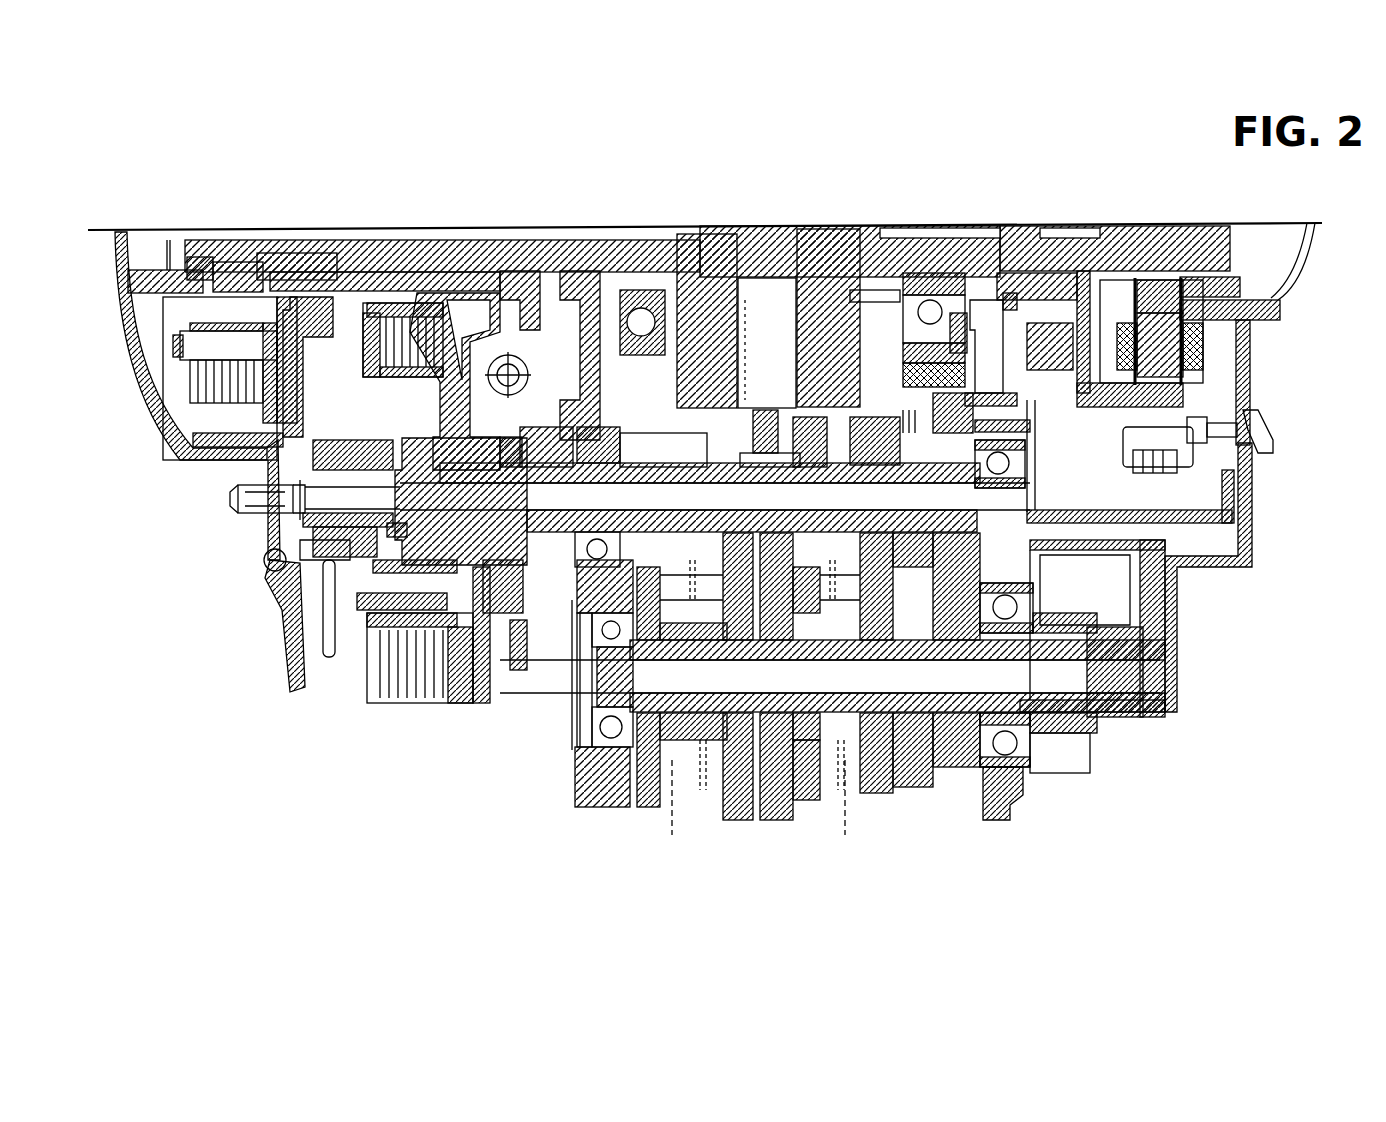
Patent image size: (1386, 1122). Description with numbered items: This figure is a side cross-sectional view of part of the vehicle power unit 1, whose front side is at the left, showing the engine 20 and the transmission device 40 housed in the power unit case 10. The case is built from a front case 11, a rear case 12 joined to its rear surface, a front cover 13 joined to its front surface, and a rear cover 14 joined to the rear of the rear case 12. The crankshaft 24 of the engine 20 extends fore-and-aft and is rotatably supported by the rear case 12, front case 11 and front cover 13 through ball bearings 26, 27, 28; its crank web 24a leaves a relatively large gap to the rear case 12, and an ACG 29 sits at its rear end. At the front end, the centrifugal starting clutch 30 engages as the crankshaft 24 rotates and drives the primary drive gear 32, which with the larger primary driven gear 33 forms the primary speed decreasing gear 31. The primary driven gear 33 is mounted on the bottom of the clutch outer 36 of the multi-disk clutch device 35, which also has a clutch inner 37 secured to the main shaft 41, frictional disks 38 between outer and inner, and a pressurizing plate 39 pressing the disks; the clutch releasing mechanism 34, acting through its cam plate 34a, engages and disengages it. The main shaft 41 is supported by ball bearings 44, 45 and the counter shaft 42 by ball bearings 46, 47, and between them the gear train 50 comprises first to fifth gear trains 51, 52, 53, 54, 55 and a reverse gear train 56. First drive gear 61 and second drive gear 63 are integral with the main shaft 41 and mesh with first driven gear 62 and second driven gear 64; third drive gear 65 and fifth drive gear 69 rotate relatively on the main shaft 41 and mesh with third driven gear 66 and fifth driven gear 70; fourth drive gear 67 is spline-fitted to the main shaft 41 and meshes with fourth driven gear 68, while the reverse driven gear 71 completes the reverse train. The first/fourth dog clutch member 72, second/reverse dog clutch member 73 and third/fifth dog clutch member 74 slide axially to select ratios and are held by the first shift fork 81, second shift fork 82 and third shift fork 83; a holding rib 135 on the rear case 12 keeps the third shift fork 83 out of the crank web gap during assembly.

The power unit 1 is at (1138, 172).
The power unit case 10 is at (1270, 420).
The front case 11 is at (575, 782).
The rear case 12 is at (1025, 800).
The front cover 13 is at (168, 455).
The rear cover 14 is at (1255, 500).
The engine 20 is at (950, 226).
The crankshaft 24 is at (873, 236).
The crank web 24a is at (790, 312).
The ball bearing 26 is at (975, 262).
The ball bearing 27 is at (632, 322).
The ball bearing 28 is at (180, 260).
The ACG (alternating current generator) 29 is at (1140, 402).
The starting clutch 30 is at (185, 393).
The primary speed decreasing gear 31 is at (545, 242).
The primary drive gear 32 is at (530, 288).
The primary driven gear 33 is at (530, 336).
The clutch releasing mechanism 34 is at (320, 682).
The cam plate 34a is at (312, 602).
The clutch device 35 is at (432, 788).
The clutch outer 36 is at (488, 700).
The clutch inner 37 is at (365, 665).
The frictional disks 38 is at (400, 695).
The pressurizing plate 39 is at (456, 703).
The transmission device 40 is at (1085, 878).
The main shaft 41 is at (985, 498).
The counter shaft 42 is at (1170, 650).
The ball bearing 44 is at (1035, 458).
The ball bearing 45 is at (560, 548).
The ball bearing 46 is at (1040, 760).
The ball bearing 47 is at (575, 703).
The gear train 50 is at (928, 860).
The first gear train 51 is at (775, 832).
The second gear train 52 is at (641, 820).
The third gear train 53 is at (729, 321).
The fourth gear train 54 is at (878, 793).
The fifth gear train 55 is at (957, 792).
The reverse gear train 56 is at (740, 828).
The first drive gear 61 is at (772, 452).
The first driven gear 62 is at (790, 836).
The second drive gear 63 is at (700, 440).
The second driven gear 64 is at (630, 820).
The third drive gear 65 is at (790, 415).
The third driven gear 66 is at (812, 802).
The fourth drive gear 67 is at (880, 415).
The fourth driven gear 68 is at (895, 790).
The fifth drive gear 69 is at (1022, 400).
The fifth driven gear 70 is at (935, 770).
The reverse driven gear 71 is at (722, 812).
The first/fourth gear change dog clutch member 72 is at (840, 792).
The second/reverse gear change dog clutch member 73 is at (712, 780).
The third/fifth gear change dog clutch member 74 is at (1028, 428).
The first shift fork 81 is at (846, 836).
The second shift fork 82 is at (672, 835).
The third shift fork 83 is at (1043, 580).
The holding rib 135 is at (975, 350).